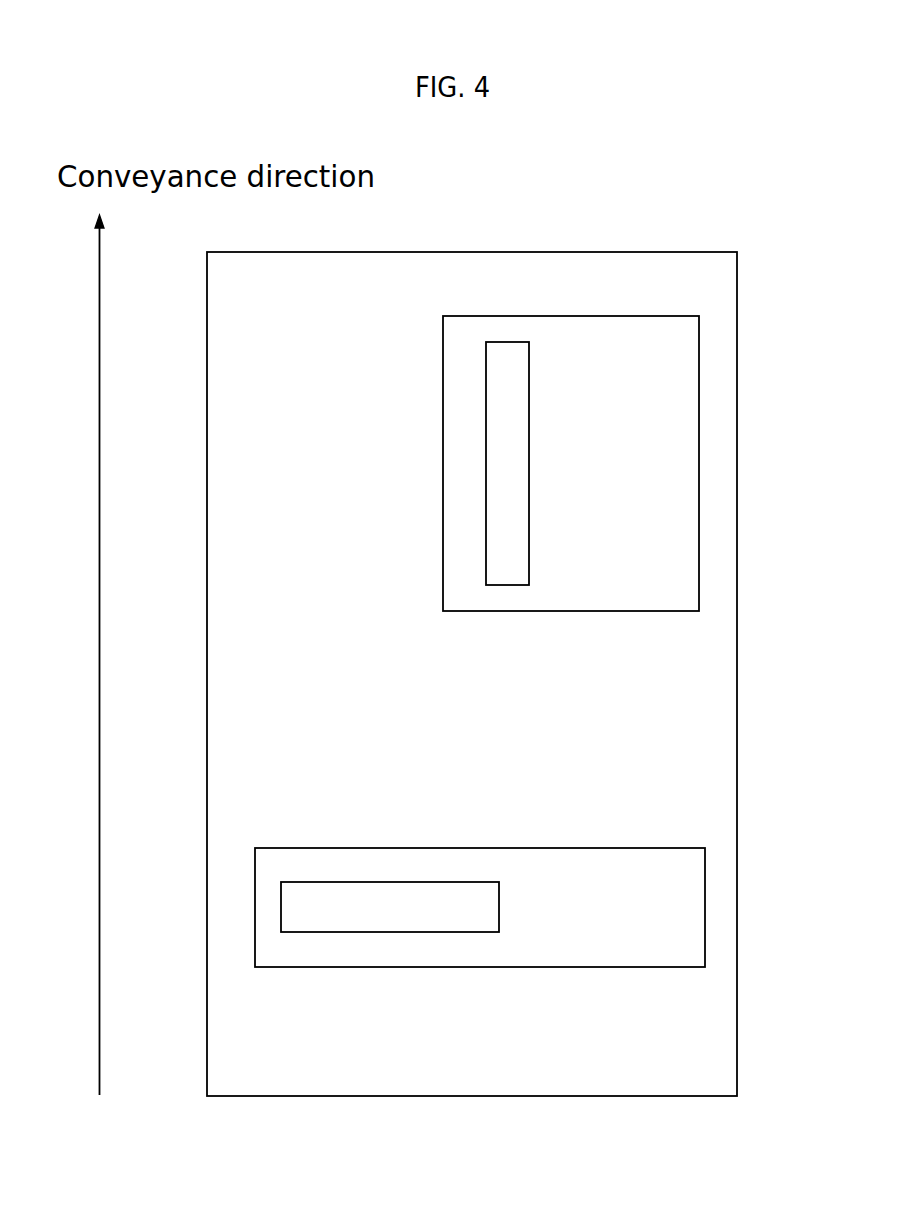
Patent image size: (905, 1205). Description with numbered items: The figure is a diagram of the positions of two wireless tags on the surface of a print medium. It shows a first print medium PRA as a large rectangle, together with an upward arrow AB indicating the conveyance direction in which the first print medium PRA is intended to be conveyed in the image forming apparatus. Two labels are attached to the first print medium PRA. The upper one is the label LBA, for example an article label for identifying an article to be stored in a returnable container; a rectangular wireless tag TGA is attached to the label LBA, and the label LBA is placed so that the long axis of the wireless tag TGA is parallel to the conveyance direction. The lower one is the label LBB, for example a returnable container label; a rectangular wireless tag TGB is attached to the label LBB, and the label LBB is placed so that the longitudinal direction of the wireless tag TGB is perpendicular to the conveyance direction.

The conveyance direction arrow AB is at (101, 448).
The first print medium PRA is at (738, 441).
The label LBA is at (443, 463).
The wireless tag TGA is at (530, 442).
The label LBB is at (378, 847).
The wireless tag TGB is at (500, 907).